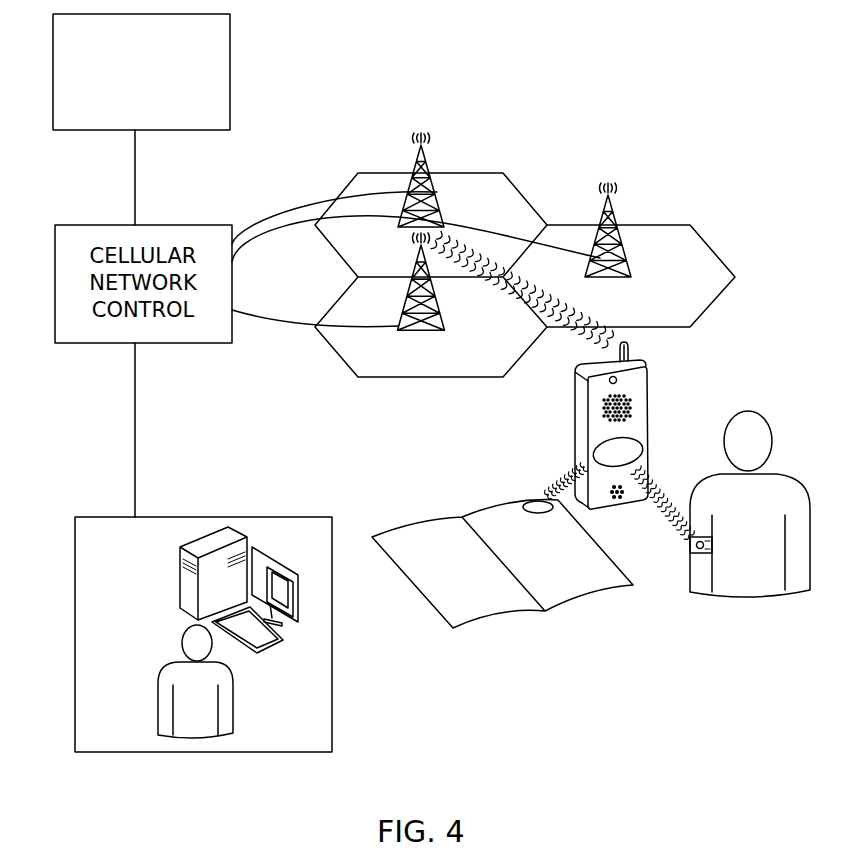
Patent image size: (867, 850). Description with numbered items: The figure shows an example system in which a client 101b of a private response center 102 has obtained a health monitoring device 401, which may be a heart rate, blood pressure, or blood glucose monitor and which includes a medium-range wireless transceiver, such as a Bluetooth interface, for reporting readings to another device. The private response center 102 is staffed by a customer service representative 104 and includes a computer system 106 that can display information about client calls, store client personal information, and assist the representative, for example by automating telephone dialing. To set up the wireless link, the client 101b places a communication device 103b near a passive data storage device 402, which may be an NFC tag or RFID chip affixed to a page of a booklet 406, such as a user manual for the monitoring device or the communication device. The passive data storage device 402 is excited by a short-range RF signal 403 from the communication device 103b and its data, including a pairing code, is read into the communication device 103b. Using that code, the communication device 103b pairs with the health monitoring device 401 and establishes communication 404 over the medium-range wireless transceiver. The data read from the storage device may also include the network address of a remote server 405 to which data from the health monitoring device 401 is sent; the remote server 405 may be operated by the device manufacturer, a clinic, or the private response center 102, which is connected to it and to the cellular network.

The remote server 405 is at (230, 42).
The private response center 102 is at (97, 530).
The computer system 106 is at (222, 547).
The customer service representative 104 is at (168, 685).
The communication device 103b is at (647, 373).
The short-range RF signal 403 is at (565, 477).
The passive data storage device 402 is at (532, 504).
The communication 404 is at (665, 502).
The health monitoring device 401 is at (702, 550).
The client 101b is at (752, 580).
The booklet 406 is at (503, 607).